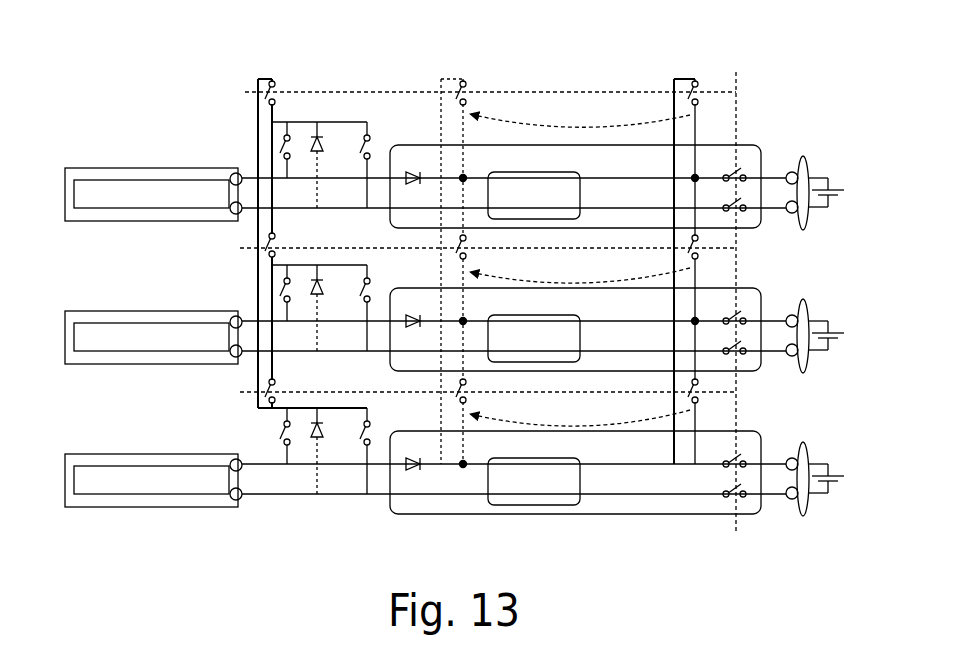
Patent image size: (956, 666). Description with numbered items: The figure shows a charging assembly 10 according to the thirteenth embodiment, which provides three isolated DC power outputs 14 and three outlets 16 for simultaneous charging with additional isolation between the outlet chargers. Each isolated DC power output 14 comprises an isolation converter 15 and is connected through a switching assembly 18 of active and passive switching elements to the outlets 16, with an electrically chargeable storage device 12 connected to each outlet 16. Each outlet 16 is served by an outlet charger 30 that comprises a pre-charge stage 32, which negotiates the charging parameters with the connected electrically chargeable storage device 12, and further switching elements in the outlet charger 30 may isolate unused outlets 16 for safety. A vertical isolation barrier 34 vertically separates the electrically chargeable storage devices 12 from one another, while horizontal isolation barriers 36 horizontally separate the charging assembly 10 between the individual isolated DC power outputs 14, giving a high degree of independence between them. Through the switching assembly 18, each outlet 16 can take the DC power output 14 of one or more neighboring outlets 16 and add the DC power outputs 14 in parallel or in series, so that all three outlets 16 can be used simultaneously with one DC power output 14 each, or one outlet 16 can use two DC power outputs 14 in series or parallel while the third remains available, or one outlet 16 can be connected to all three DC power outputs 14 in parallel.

The charging assembly 10 is at (247, 74).
The electrically chargeable storage device 12 is at (832, 178).
The isolated DC power output 14 is at (87, 168).
The isolation converter 15 is at (132, 180).
The outlet 16 is at (802, 157).
The switching assembly 18 is at (347, 81).
The outlet charger 30 is at (645, 146).
The pre-charge stage 32 is at (538, 166).
The vertical isolation barrier 34 is at (735, 513).
The horizontal isolation barrier 36 is at (375, 248).